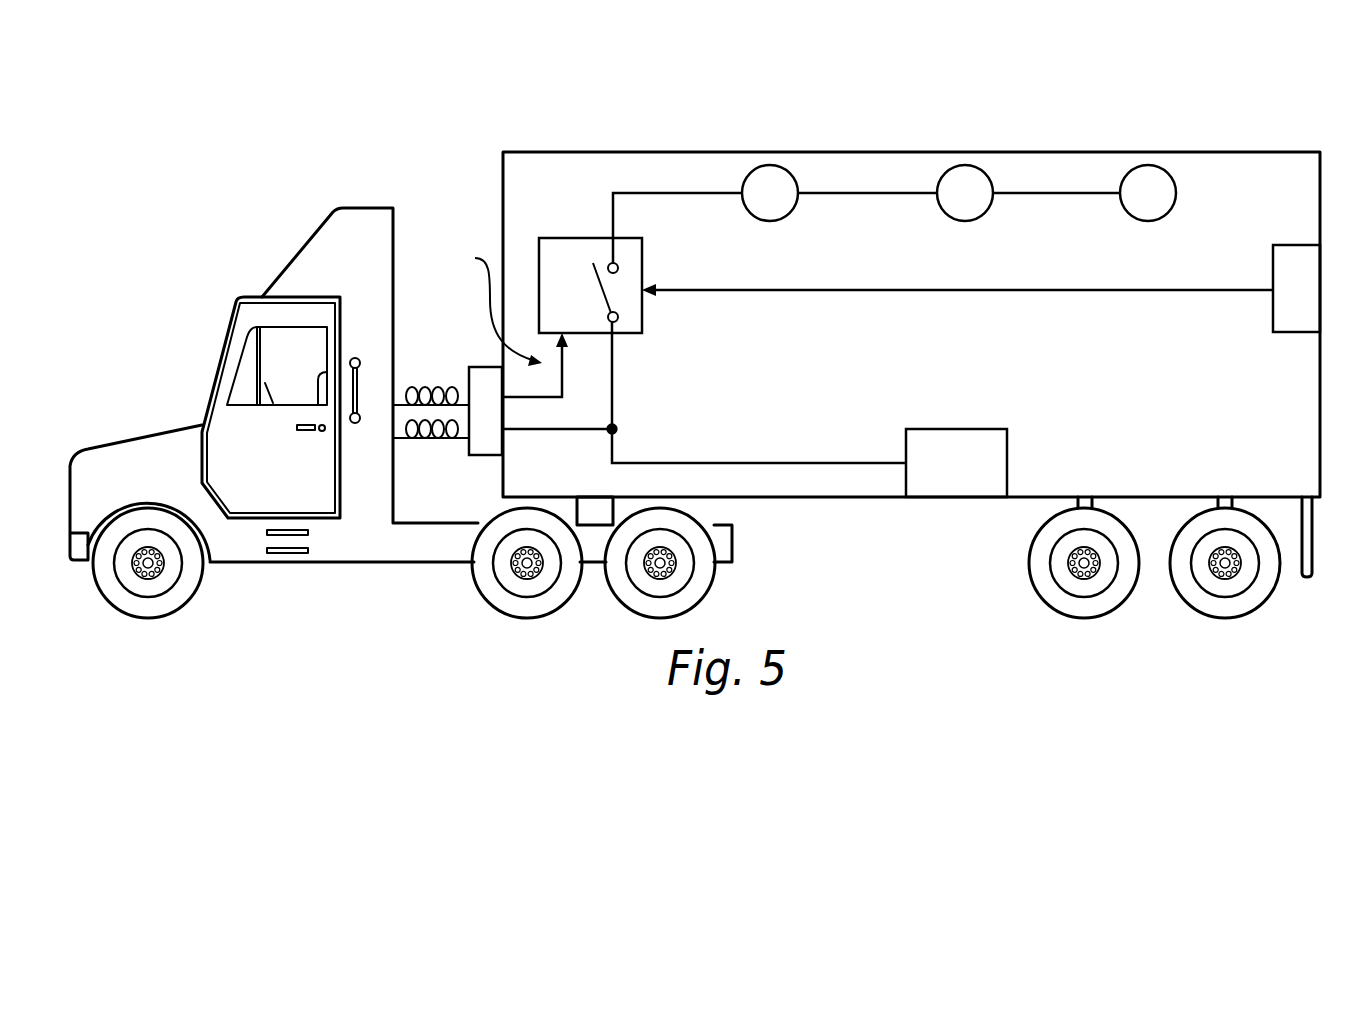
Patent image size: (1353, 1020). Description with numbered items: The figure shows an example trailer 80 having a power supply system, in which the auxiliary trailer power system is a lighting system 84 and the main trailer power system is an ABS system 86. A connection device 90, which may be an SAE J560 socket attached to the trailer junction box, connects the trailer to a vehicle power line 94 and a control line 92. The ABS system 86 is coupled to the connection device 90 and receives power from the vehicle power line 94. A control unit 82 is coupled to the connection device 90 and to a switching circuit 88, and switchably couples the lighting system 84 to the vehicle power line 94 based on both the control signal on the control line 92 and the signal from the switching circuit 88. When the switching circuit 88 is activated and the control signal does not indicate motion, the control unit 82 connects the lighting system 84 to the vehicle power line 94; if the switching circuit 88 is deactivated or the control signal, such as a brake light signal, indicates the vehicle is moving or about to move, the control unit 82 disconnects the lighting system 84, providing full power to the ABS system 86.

The trailer 80 is at (210, 159).
The control unit 82 is at (568, 237).
The lighting system 84 is at (1034, 238).
The ABS system 86 is at (1008, 467).
The switching circuit 88 is at (1298, 245).
The connection device 90 is at (468, 377).
The control line 92 is at (563, 373).
The vehicle power line 94 is at (807, 462).